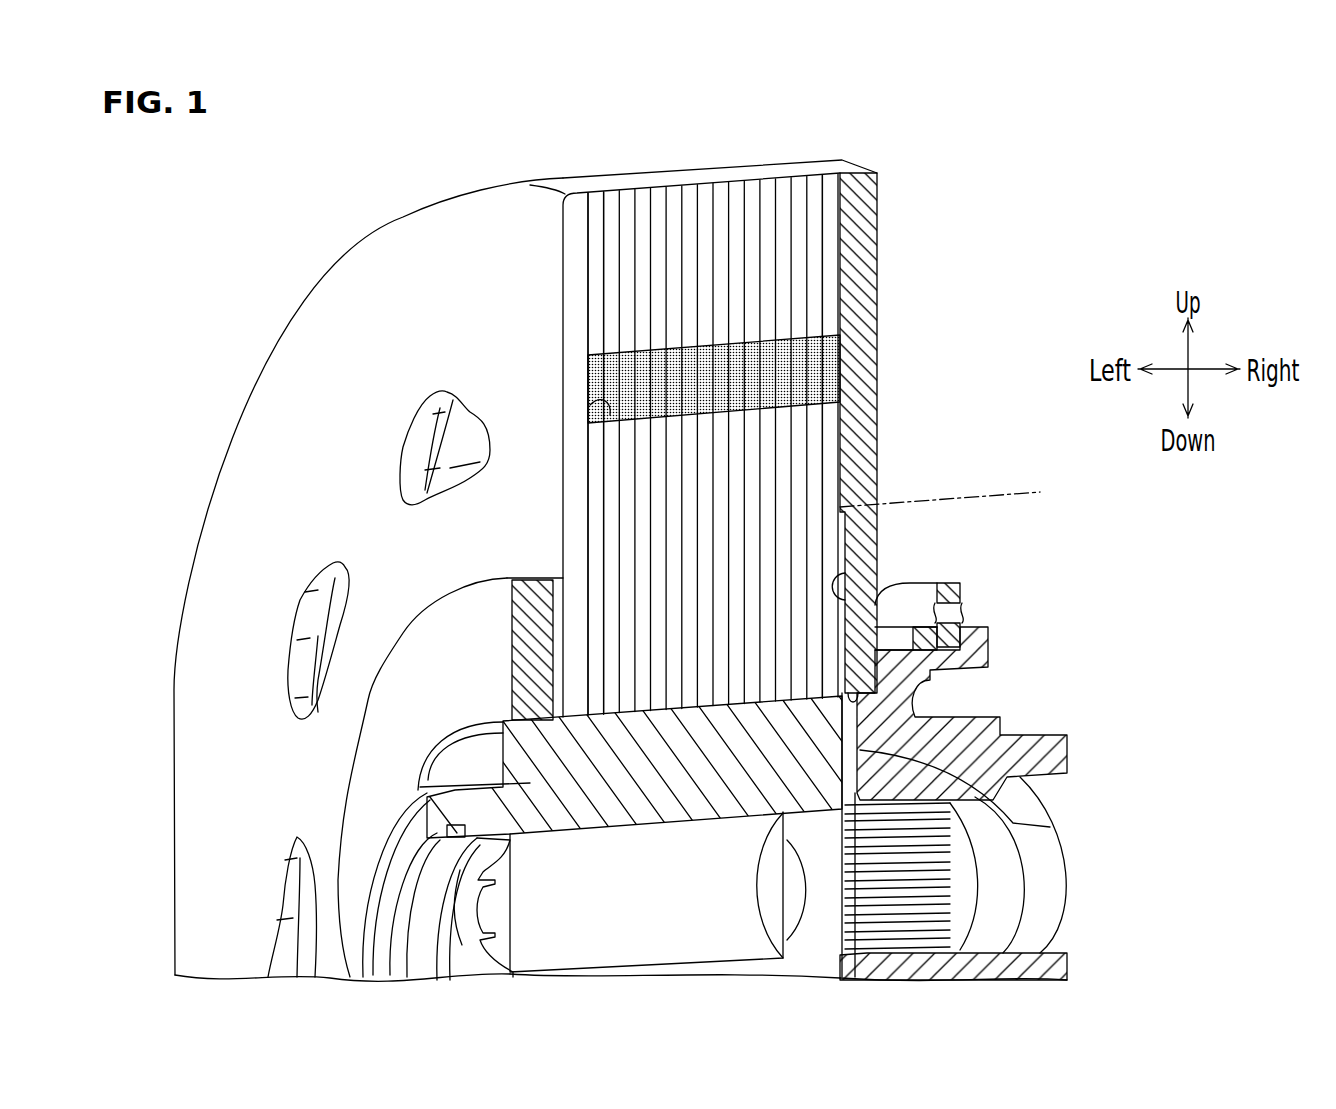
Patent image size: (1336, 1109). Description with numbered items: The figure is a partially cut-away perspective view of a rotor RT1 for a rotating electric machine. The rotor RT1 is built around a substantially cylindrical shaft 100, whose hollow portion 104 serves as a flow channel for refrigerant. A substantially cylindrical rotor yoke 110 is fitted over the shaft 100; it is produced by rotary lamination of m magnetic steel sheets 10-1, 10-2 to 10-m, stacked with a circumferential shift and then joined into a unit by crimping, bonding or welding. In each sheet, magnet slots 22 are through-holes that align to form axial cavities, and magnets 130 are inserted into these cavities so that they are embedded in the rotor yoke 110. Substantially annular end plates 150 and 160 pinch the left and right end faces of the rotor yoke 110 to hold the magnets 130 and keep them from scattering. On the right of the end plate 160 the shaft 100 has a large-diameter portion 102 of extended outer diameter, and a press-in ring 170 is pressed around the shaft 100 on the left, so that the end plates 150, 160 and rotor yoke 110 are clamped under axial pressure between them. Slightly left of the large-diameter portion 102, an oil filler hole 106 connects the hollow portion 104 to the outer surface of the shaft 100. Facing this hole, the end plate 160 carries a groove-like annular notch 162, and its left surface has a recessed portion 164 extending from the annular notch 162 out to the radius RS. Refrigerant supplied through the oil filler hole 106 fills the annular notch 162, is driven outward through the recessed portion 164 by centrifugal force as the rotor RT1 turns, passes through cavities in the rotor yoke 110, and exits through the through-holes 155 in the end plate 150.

The rotor yoke 110 is at (842, 120).
The magnetic steel sheet 10-1 is at (598, 203).
The magnetic steel sheet 10-2 is at (610, 200).
The magnetic steel sheet 10-m is at (833, 173).
The end plate 150 is at (447, 233).
The through-holes 155 is at (433, 428).
The magnet slot 22 is at (590, 405).
The end plate 160 is at (860, 270).
The magnets 130 is at (780, 365).
The recessed portion 164 is at (845, 585).
The radius RS is at (1021, 510).
The large-diameter portion 102 is at (912, 677).
The annular notch 162 is at (930, 708).
The oil filler hole 106 is at (969, 865).
The hollow portion 104 is at (580, 830).
The press-in ring 170 is at (366, 768).
The shaft 100 is at (457, 807).
The rotor RT1 is at (1040, 228).